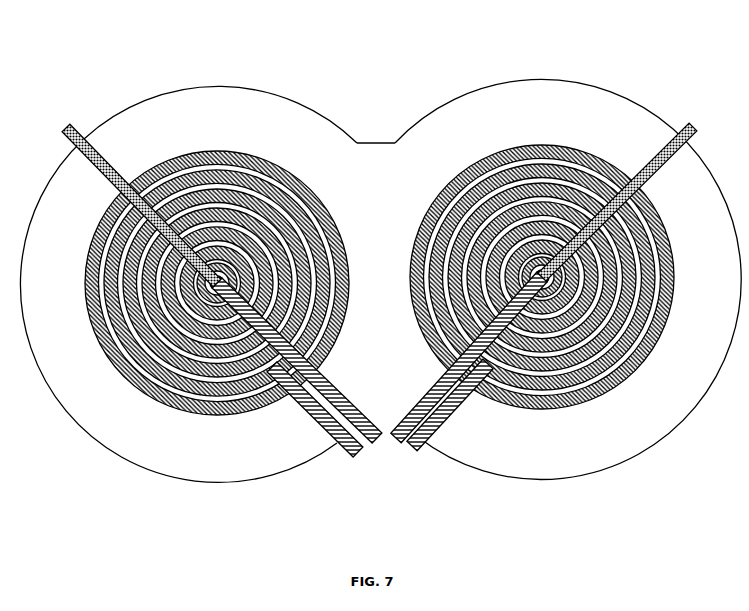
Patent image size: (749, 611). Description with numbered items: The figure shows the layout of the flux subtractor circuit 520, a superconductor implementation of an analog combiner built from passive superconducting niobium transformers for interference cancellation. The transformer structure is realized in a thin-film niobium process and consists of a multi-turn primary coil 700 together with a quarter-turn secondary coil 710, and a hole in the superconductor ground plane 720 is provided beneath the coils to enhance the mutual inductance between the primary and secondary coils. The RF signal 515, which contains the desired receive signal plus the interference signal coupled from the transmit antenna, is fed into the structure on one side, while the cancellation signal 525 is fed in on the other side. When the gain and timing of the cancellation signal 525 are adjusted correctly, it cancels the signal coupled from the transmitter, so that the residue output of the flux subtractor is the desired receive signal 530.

The flux subtractor circuit 520 is at (45, 55).
The RF signal 515 is at (33, 102).
The hole in the superconductor ground plane 720 is at (368, 154).
The cancellation signal 525 is at (723, 107).
The quarter-turn secondary coil 710 is at (347, 442).
The desired receive signal 530 is at (362, 452).
The multi-turn primary coil 700 is at (600, 420).